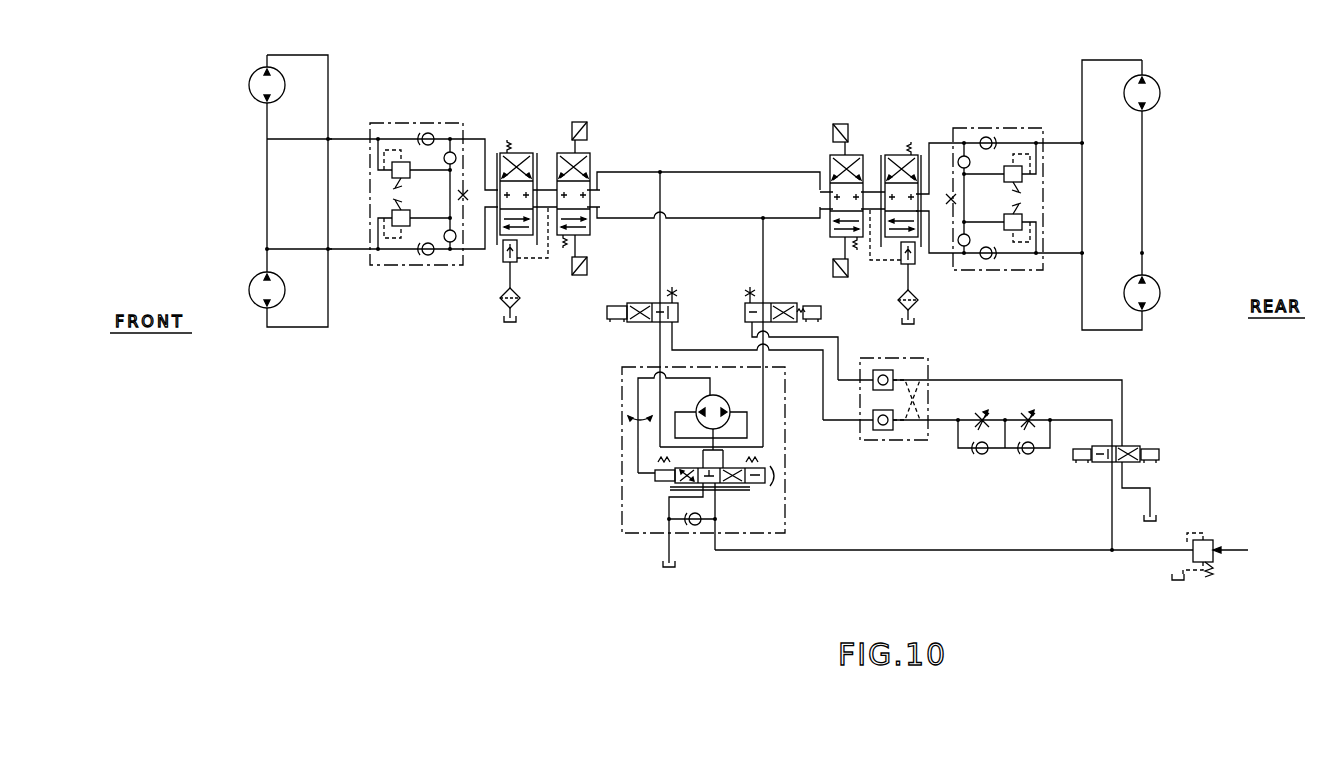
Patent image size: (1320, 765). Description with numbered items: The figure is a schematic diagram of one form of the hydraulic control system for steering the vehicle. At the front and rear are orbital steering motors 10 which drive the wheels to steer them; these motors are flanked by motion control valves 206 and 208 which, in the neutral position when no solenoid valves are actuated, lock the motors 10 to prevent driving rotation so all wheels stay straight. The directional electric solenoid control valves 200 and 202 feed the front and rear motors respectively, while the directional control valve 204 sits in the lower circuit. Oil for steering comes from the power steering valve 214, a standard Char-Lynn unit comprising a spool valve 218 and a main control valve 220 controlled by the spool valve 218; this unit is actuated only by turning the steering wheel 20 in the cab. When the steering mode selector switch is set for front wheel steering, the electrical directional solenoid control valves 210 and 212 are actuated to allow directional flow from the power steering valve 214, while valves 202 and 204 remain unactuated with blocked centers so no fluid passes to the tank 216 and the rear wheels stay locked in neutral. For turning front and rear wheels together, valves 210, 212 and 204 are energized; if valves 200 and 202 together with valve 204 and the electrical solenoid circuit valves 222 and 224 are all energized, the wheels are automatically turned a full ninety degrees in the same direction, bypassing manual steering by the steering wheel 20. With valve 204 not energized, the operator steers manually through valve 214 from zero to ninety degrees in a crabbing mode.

The orbital steering motor 10 is at (250, 90).
The steering wheel 20 is at (780, 476).
The directional control valve 200 is at (585, 152).
The directional control valve 202 is at (856, 154).
The directional control valve 204 is at (1130, 446).
The motion control valve 206 is at (440, 130).
The motion control valve 208 is at (1010, 133).
The electrical directional solenoid control valve 210 is at (632, 330).
The electrical directional solenoid control valve 212 is at (795, 300).
The power steering valve 214 is at (636, 512).
The tank 216 is at (503, 325).
The spool valve 218 is at (672, 468).
The main control valve 220 is at (698, 405).
The electrical solenoid circuit valve 222 is at (525, 152).
The electrical solenoid circuit valve 224 is at (900, 154).